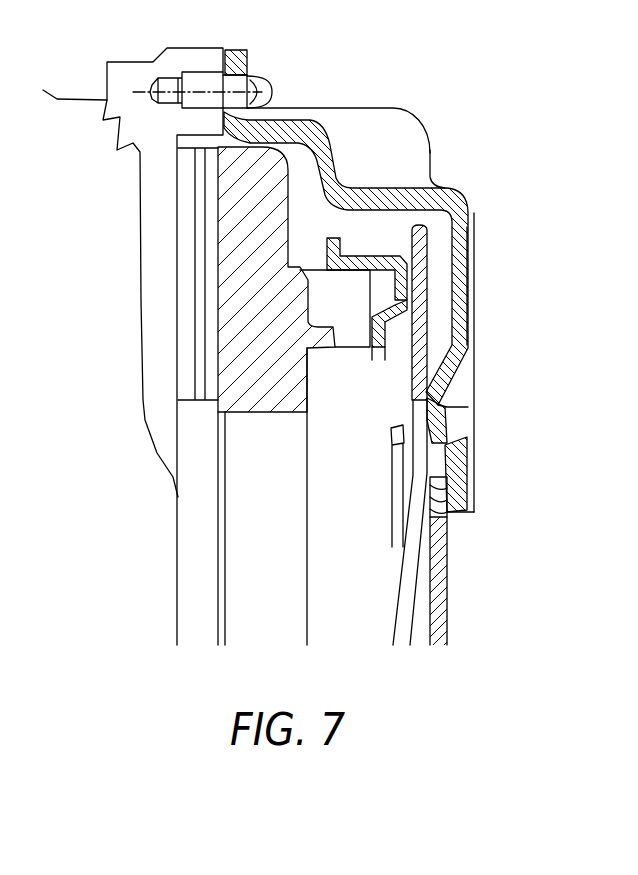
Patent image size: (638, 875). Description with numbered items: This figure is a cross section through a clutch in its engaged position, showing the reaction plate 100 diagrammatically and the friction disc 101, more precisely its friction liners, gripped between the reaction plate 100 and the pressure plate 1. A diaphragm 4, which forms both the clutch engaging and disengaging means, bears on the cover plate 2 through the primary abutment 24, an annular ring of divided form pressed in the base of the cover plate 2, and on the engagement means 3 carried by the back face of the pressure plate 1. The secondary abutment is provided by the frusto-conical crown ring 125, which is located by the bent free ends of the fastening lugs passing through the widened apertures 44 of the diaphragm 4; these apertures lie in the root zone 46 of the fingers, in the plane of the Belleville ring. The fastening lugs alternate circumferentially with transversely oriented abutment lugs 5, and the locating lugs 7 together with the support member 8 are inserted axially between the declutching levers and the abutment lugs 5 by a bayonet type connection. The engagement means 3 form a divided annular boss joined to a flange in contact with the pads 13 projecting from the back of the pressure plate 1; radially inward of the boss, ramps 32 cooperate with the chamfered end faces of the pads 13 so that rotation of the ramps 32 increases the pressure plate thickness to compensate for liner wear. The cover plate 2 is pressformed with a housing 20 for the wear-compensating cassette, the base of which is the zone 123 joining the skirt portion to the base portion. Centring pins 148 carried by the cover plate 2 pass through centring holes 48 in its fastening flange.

The pressure plate 1 is at (254, 207).
The cover plate 2 is at (472, 191).
The engagement means 3 is at (410, 298).
The diaphragm 4 is at (444, 234).
The abutment lugs 5 is at (457, 472).
The locating lugs 7 is at (448, 533).
The support member 8 is at (448, 585).
The pads 13 is at (350, 318).
The housing 20 is at (393, 108).
The primary abutment 24 is at (440, 400).
The ramps 32 is at (410, 335).
The widened apertures 44 is at (423, 432).
The root zone 46 is at (422, 498).
The centring holes 48 is at (268, 86).
The reaction plate 100 is at (163, 285).
The friction disc 101 is at (187, 380).
The zone joining the skirt portion to the base portion 123 is at (432, 177).
The frusto-conical crown ring 125 is at (400, 427).
The centring pins 148 is at (272, 82).